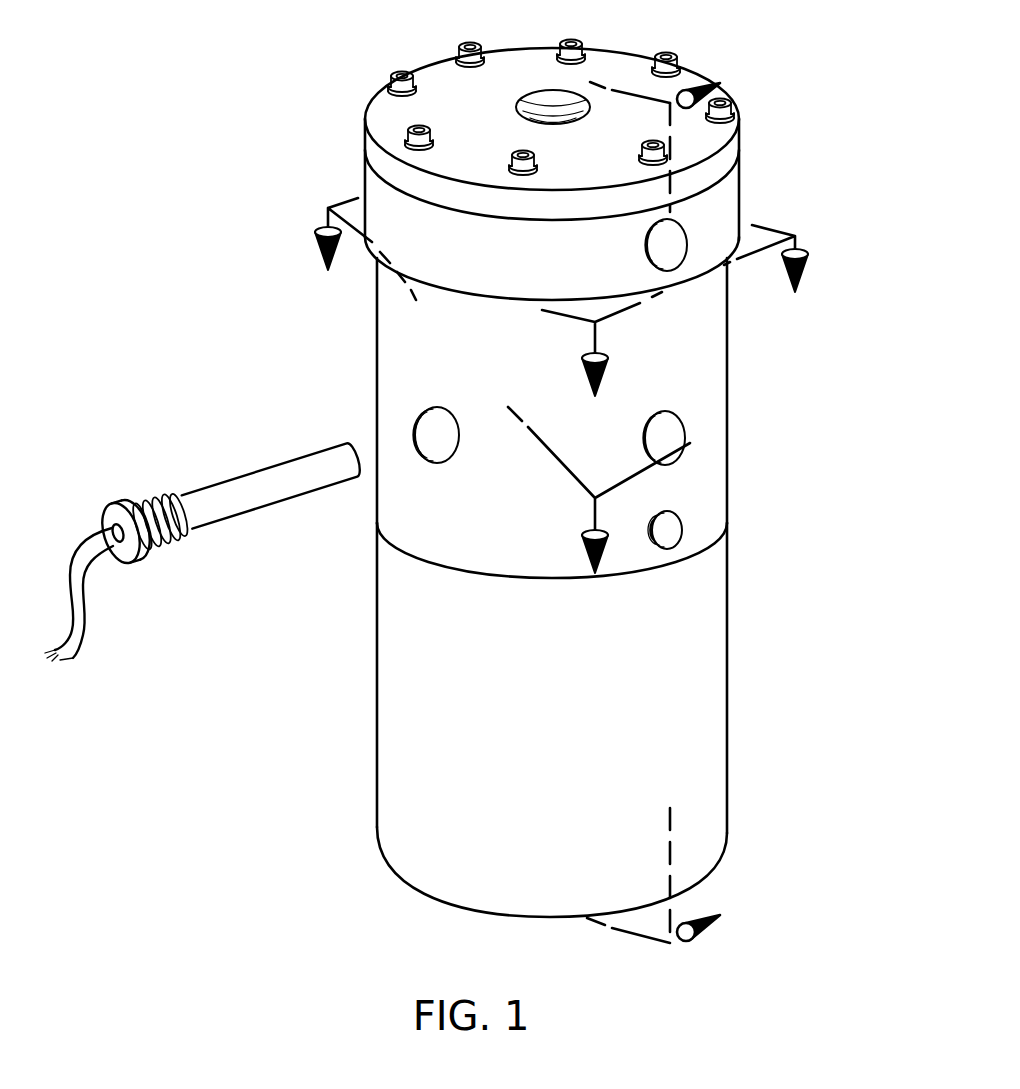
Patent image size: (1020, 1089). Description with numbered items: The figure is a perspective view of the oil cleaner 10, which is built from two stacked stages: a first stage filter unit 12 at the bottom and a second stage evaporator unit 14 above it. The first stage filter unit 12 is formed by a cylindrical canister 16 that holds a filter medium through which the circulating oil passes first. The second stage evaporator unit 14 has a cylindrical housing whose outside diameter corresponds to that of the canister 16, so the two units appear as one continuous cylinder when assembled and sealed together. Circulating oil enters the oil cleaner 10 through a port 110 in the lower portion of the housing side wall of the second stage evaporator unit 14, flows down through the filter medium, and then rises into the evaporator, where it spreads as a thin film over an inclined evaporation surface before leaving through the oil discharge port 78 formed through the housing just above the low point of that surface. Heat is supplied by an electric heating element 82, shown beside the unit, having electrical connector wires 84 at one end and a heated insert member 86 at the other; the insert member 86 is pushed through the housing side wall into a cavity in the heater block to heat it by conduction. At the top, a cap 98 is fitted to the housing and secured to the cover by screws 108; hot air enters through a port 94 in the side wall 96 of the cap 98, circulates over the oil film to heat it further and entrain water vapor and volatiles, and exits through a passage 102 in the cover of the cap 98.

The oil cleaner 10 is at (258, 196).
The first stage filter unit 12 is at (534, 749).
The second stage evaporator unit 14 is at (492, 500).
The cylindrical canister 16 is at (704, 383).
The oil discharge port 78 is at (695, 433).
The electric heating element 82 is at (203, 470).
The electrical connector wires 84 is at (83, 632).
The heated insert member 86 is at (245, 490).
The port 94 is at (660, 246).
The side wall 96 is at (719, 206).
The cap 98 is at (455, 260).
The passage 102 is at (548, 108).
The screws 108 is at (569, 41).
The port 110 is at (686, 528).